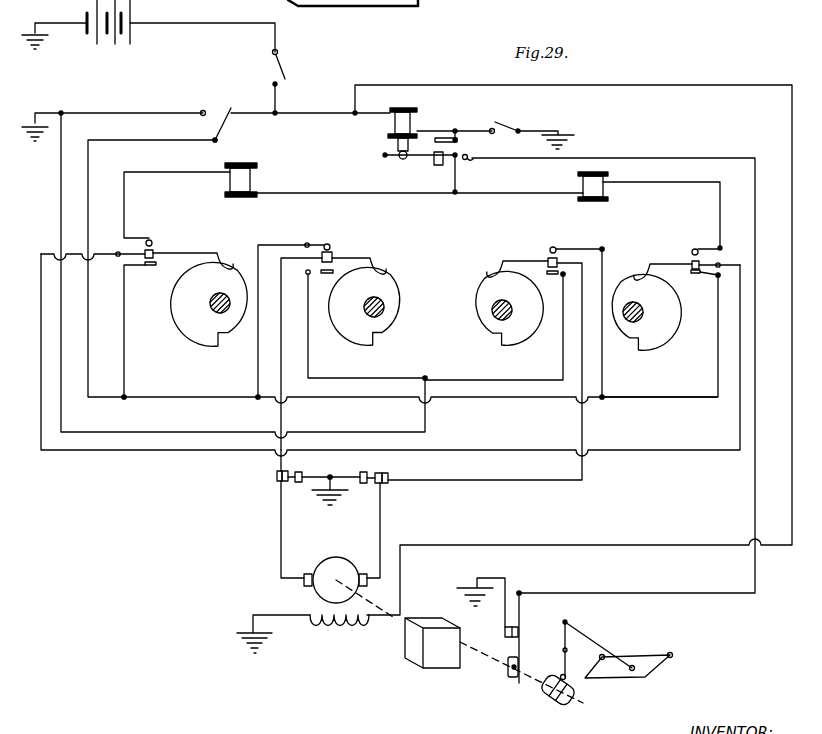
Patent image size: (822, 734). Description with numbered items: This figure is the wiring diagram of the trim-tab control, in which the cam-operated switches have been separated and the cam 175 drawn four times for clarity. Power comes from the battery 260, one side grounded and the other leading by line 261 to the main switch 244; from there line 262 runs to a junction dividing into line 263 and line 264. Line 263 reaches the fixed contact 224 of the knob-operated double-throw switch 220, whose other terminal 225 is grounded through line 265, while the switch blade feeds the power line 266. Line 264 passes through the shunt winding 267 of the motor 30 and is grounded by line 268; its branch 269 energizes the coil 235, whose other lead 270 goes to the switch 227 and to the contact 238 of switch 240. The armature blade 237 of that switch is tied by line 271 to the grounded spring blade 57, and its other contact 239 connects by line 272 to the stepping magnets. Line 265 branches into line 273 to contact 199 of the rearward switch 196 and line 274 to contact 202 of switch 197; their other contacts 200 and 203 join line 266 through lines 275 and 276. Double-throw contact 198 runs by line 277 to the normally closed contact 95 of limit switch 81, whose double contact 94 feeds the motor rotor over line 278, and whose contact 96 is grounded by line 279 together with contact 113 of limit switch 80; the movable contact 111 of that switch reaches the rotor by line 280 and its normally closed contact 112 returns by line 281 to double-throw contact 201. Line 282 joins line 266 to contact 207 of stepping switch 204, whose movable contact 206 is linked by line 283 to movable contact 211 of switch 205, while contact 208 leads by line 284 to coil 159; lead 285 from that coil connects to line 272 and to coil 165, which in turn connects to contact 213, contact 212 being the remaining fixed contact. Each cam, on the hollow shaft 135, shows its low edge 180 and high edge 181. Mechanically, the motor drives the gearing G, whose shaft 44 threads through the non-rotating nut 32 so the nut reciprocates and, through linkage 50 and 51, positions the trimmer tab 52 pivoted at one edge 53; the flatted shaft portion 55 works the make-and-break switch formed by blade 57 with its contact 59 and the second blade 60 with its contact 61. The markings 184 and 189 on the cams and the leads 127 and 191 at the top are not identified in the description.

The battery 260 is at (116, 44).
The line 261 is at (182, 25).
The main switch 244 is at (286, 80).
The line 262 is at (279, 100).
The line 264 is at (480, 85).
The line 265 is at (150, 111).
The line 266 is at (160, 141).
The single-pole double-throw switch 220 is at (218, 108).
The fixed contact 225 is at (203, 110).
The line 263 is at (247, 114).
The fixed contact 224 is at (233, 118).
The branch 269 is at (378, 118).
The coil 235 is at (419, 120).
The lead 270 is at (440, 128).
The switch 227 is at (515, 125).
The switch blade 237 is at (418, 157).
The contact 238 is at (460, 143).
The contact 239 is at (440, 167).
The switch 240 is at (480, 166).
The line 271 is at (506, 160).
The line 272 is at (458, 181).
The lead 285 is at (338, 193).
The coil 159 is at (258, 178).
The coil 165 is at (580, 183).
The line 280 is at (648, 185).
The line 284 is at (125, 195).
The fixed contact 208 is at (152, 240).
The double-throw contact 206 is at (144, 250).
The fixed contact 207 is at (147, 267).
The forward switch 204 is at (164, 251).
The low edge 180 is at (247, 280).
The shaft 135 is at (212, 308).
The cam 175 is at (198, 330).
The high edge 181 is at (197, 345).
The cam follower 184 is at (223, 257).
The line 282 is at (125, 318).
The line 275 is at (258, 368).
The fixed contact 200 is at (328, 243).
The double-throw contact 198 is at (334, 256).
The rearward switch 196 is at (343, 250).
The fixed contact 199 is at (325, 274).
The cam follower 189 is at (384, 266).
The line 277 is at (282, 340).
The line 273 is at (393, 378).
The rearward switch 197 is at (535, 252).
The fixed contact 203 is at (556, 248).
The double-throw contact 201 is at (558, 262).
The fixed contact 202 is at (548, 280).
The line 274 is at (496, 378).
The forward switch 205 is at (688, 255).
The fixed contact 213 is at (697, 249).
The double-throw contact 211 is at (702, 260).
The fixed contact 212 is at (695, 275).
The line 276 is at (604, 380).
The line 283 is at (40, 451).
The fixed contact 95 is at (276, 477).
The double contact 94 is at (290, 473).
The fixed contact 96 is at (298, 483).
The line 279 is at (322, 478).
The fixed contact 113 is at (372, 465).
The movable contact 111 is at (382, 472).
The fixed contact 112 is at (390, 475).
The limit switch 81 is at (276, 488).
The line 278 is at (281, 548).
The limit switch 80 is at (389, 490).
The line 281 is at (507, 481).
The motor 30 is at (340, 553).
The shunt winding 267 is at (338, 627).
The line 268 is at (280, 612).
The gearing G is at (432, 664).
The shaft 44 is at (490, 655).
The second switch blade 60 is at (504, 615).
The contact 61 is at (505, 631).
The spring switch blade 57 is at (521, 618).
The contact 59 is at (520, 630).
The portion 55 is at (513, 679).
The linkage 50 is at (563, 643).
The linkage 51 is at (603, 647).
The trimmer tab 52 is at (652, 667).
The edge 53 is at (673, 655).
The nut 32 is at (556, 701).
The conductor 127 is at (623, 0).
The conductor 191 is at (674, 0).